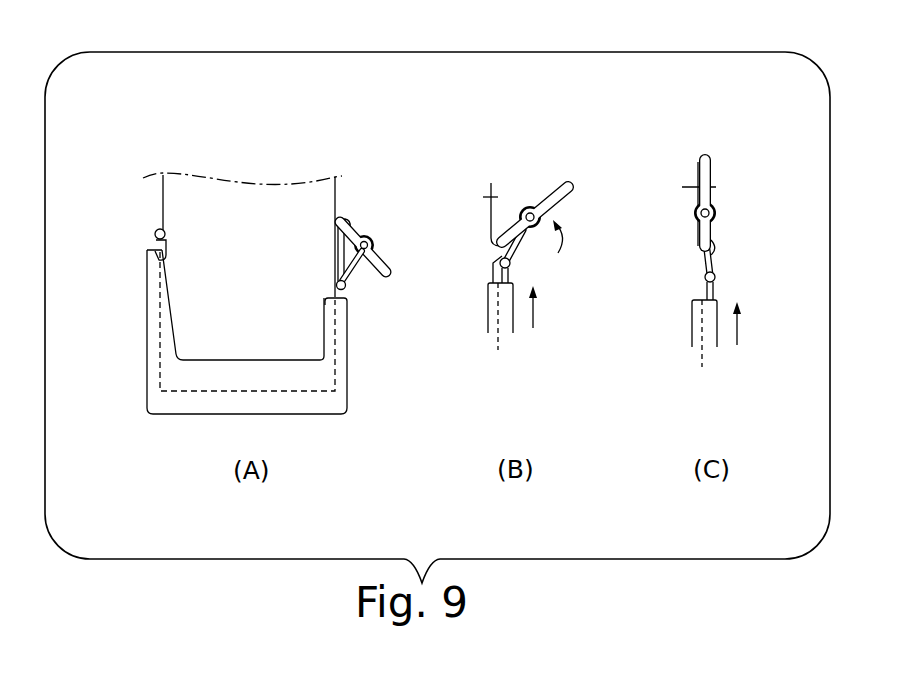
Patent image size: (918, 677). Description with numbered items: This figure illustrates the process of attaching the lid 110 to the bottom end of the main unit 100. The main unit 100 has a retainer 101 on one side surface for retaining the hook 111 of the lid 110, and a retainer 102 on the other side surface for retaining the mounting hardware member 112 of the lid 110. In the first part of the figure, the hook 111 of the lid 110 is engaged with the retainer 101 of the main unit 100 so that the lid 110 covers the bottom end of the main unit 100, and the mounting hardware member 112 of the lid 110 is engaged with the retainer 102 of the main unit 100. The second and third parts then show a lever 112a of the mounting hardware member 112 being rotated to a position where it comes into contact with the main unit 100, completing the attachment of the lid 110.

The main unit 100 is at (161, 191).
The retainer 101 is at (158, 245).
The retainer 102 is at (345, 223).
The lid 110 is at (194, 416).
The hook 111 is at (155, 232).
The mounting hardware member 112 is at (383, 258).
The lever 112a is at (569, 183).